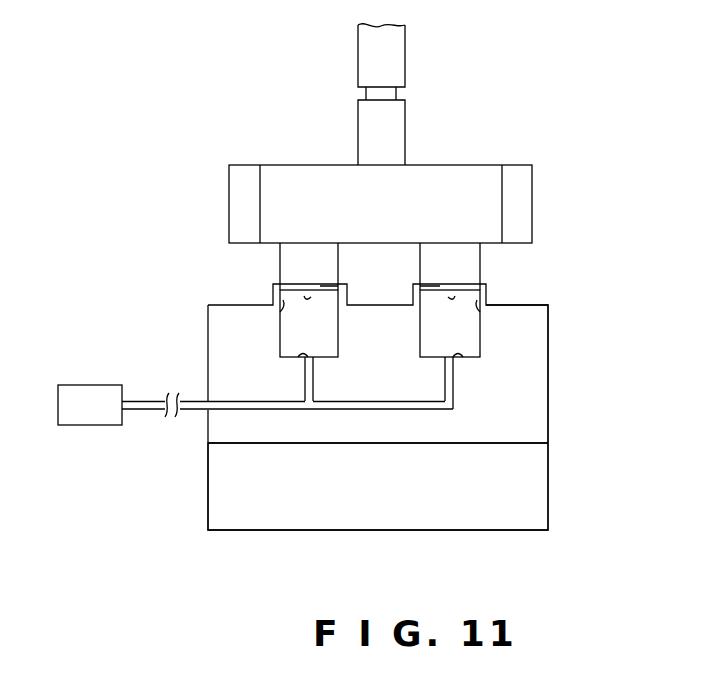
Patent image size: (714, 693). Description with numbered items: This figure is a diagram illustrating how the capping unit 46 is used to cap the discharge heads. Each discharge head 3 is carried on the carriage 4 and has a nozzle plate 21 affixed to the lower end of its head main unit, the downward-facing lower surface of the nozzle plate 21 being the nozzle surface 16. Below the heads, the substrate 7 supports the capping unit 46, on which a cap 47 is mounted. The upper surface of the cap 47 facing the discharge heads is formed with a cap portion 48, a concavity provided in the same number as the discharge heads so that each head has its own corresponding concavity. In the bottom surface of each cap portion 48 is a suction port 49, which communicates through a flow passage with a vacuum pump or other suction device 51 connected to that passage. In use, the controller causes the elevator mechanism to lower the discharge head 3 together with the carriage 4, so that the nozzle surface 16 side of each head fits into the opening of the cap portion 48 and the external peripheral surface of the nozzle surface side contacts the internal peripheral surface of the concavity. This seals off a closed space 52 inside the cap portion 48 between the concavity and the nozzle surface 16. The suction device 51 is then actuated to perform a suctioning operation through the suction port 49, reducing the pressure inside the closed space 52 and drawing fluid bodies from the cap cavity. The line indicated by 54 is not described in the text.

The discharge head 3 is at (280, 258).
The carriage 4 is at (487, 172).
The substrate 7 is at (586, 298).
The nozzle surface 16 is at (304, 296).
The nozzle plate 21 is at (440, 286).
The capping unit 46 is at (208, 333).
The cap 47 is at (543, 348).
The cap portion 48 is at (280, 312).
The suction port 49 is at (298, 357).
The suction device 51 is at (82, 385).
The closed space 52 is at (322, 338).
The cable 54 is at (428, 409).